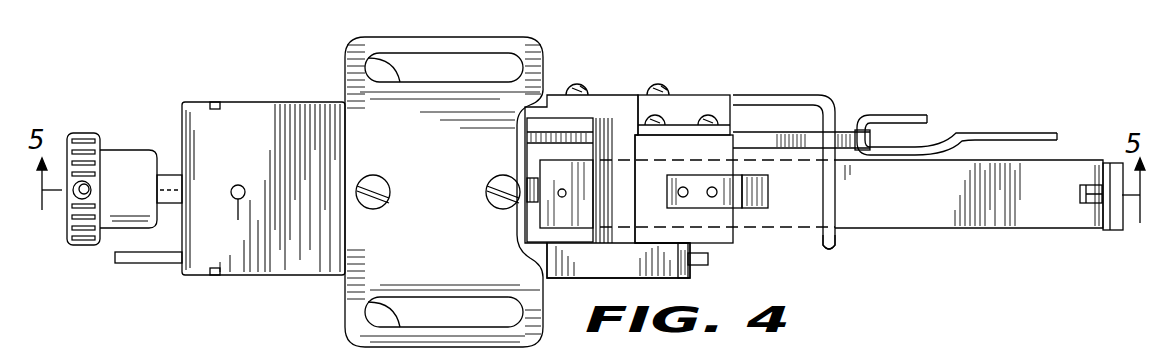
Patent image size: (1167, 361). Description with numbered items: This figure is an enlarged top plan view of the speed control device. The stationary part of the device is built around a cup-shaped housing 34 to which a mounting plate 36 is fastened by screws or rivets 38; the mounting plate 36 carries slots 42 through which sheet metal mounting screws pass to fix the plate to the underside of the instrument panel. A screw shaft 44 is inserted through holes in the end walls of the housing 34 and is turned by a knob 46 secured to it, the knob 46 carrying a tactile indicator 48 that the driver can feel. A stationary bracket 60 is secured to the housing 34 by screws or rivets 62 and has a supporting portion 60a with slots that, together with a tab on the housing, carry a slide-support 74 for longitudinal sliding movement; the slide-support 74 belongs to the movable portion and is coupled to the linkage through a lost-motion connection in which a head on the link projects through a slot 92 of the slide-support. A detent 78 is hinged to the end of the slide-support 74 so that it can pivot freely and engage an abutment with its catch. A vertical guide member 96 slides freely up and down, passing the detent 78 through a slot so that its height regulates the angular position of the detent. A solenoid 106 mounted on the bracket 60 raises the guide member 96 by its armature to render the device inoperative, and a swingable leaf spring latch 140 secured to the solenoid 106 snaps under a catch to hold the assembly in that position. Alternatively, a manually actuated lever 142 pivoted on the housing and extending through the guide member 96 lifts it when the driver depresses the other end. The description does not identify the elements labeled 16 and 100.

The rod 16 is at (1005, 133).
The cup-shaped housing 34 is at (270, 258).
The mounting plate 36 is at (365, 337).
The screws or rivets 38 is at (372, 181).
The slots 42 is at (362, 70).
The screw shaft 44 is at (166, 182).
The knob 46 is at (86, 138).
The tactile indicator 48 is at (75, 197).
The stationary bracket 60 is at (760, 97).
The supporting portion 60a is at (838, 248).
The screws or rivets 62 is at (578, 84).
The slide-support 74 is at (1025, 214).
The detent 78 is at (1113, 165).
The slot 92 is at (1082, 190).
The guide member 96 is at (676, 254).
The threaded member 100 is at (580, 136).
The solenoid 106 is at (735, 237).
The leaf spring latch 140 is at (742, 190).
The manually actuated lever 142 is at (145, 263).